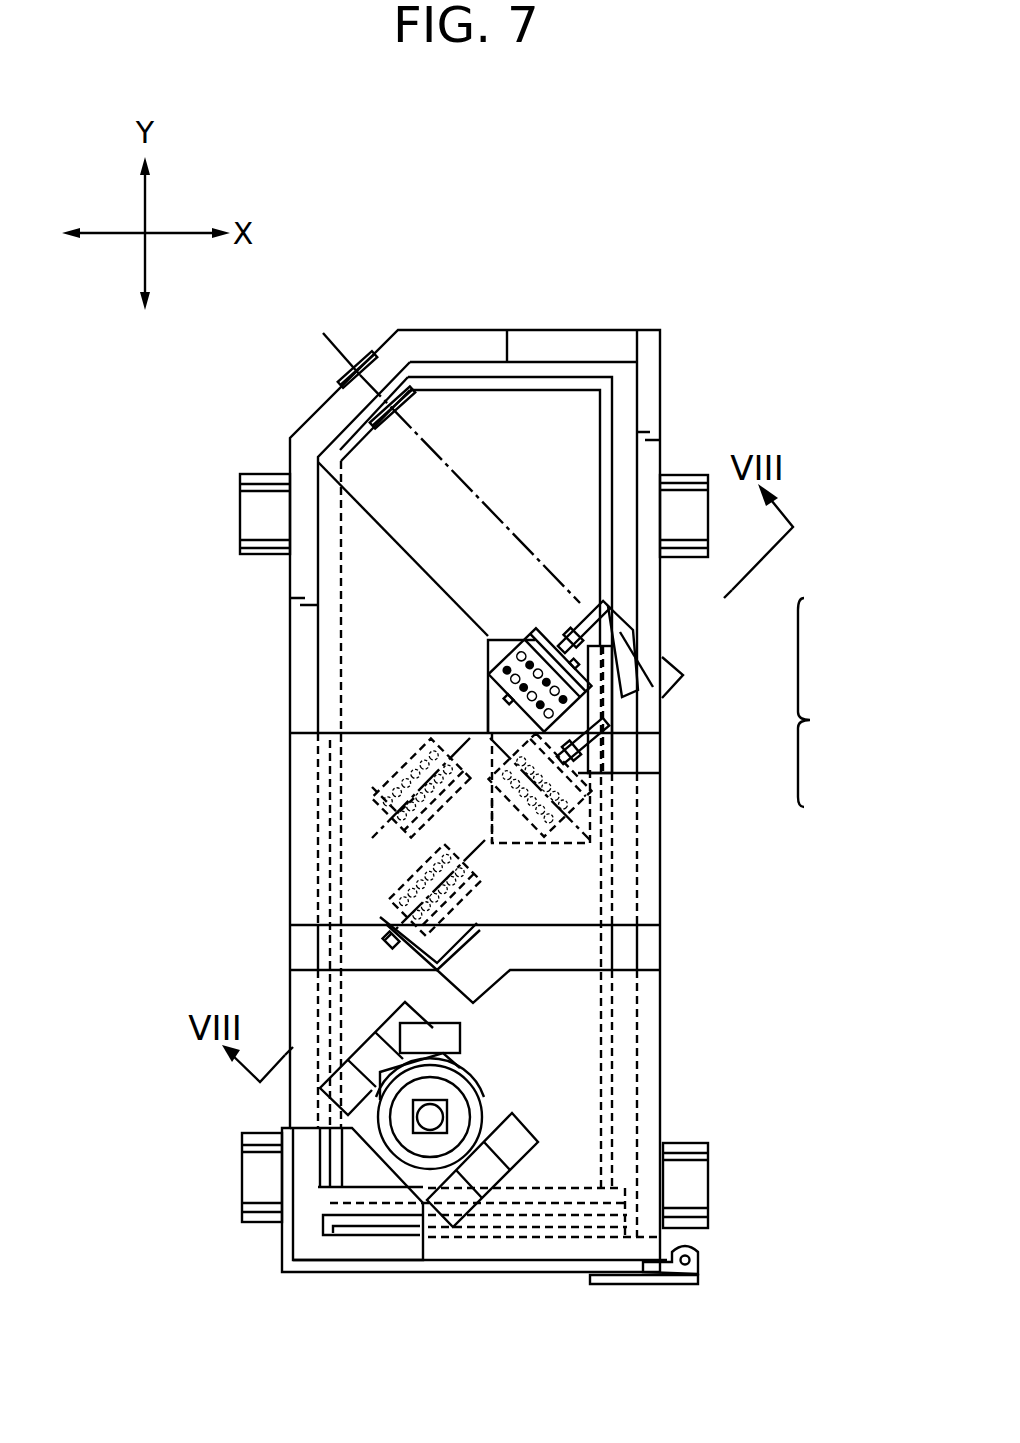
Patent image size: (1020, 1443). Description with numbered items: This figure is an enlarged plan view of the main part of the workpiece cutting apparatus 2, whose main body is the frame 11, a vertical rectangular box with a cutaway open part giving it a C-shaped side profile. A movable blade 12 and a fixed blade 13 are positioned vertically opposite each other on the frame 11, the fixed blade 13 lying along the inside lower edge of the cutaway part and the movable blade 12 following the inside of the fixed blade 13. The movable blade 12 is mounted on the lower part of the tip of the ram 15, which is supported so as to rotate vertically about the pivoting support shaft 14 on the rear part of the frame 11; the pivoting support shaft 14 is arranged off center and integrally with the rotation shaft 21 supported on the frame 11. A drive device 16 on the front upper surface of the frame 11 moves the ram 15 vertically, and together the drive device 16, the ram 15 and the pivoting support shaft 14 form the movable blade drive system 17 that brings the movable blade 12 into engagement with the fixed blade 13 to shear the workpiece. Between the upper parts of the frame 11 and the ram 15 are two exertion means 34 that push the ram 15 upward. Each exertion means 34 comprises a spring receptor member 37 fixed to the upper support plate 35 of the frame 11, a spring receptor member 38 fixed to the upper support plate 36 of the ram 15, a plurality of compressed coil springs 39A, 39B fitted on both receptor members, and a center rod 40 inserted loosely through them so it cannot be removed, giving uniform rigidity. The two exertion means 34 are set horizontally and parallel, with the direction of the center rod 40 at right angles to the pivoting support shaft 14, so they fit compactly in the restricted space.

The workpiece cutting apparatus 2 is at (214, 500).
The frame 11 is at (288, 712).
The movable blade 12 is at (405, 1220).
The fixed blade 13 is at (345, 1236).
The pivoting support shaft 14 is at (552, 586).
The ram 15 is at (614, 760).
The drive device 16 is at (490, 1106).
The movable blade drive system 17 is at (829, 702).
The rotation shaft 21 is at (368, 358).
The exertion means 34 is at (455, 691).
The upper support plate 35 is at (312, 905).
The upper support plate 36 is at (476, 616).
The spring receptor member 37 is at (372, 787).
The spring receptor member 38 is at (530, 630).
The compressed coil spring 39A is at (490, 677).
The compressed coil spring 39B is at (490, 688).
The center rod 40 is at (614, 710).